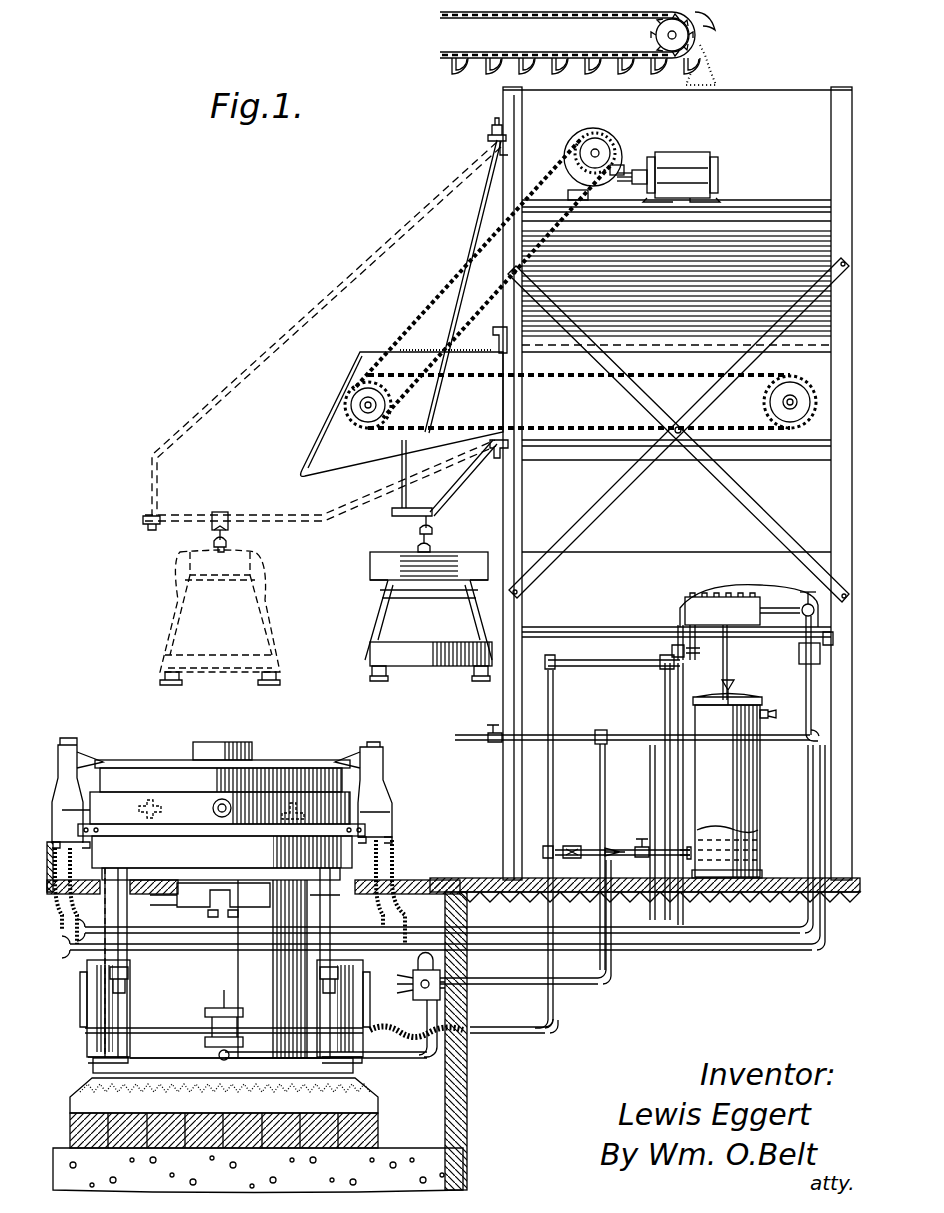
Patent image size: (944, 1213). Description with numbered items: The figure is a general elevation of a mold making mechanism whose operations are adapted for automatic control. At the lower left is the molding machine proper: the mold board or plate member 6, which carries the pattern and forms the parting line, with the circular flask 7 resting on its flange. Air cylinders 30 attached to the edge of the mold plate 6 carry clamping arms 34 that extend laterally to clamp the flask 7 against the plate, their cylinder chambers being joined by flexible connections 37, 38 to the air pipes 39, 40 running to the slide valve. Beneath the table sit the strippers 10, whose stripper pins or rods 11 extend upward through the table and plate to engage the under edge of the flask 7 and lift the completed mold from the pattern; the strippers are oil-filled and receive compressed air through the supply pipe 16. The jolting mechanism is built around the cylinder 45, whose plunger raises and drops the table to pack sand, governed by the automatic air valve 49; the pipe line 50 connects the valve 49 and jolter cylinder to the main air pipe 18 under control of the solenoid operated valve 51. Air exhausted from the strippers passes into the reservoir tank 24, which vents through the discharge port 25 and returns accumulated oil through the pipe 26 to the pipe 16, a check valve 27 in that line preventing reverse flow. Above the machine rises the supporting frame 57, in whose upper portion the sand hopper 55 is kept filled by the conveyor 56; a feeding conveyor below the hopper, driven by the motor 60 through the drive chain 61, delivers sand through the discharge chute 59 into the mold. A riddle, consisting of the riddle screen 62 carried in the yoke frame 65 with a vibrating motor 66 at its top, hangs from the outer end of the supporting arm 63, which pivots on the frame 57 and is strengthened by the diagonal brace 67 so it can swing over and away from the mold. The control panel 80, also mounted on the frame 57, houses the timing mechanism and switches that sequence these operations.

The mold board or plate member 6 is at (176, 822).
The flask 7 is at (125, 790).
The strippers 10 is at (87, 998).
The stripper pins or rods 11 is at (128, 885).
The supply pipe 16 is at (147, 1030).
The pipe 18 is at (778, 610).
The reservoir tank 24 is at (750, 765).
The discharge port 25 is at (770, 713).
The pipe 26 is at (630, 848).
The check valve 27 is at (572, 845).
The air cylinders 30 is at (83, 806).
The clamping arms 34 is at (360, 752).
The flexible connection 37 is at (394, 848).
The flexible connection 38 is at (400, 868).
The air pipe 39 is at (650, 772).
The air pipe 40 is at (678, 753).
The cylinder 45 is at (453, 1034).
The automatic air valve 49 is at (224, 1008).
The pipe line 50 is at (427, 1009).
The solenoid operated valve 51 is at (413, 972).
The hopper 55 is at (528, 112).
The conveyor 56 is at (491, 58).
The supporting frame 57 is at (610, 428).
The discharge chute 59 is at (340, 433).
The motor 60 is at (678, 160).
The drive chain 61 is at (546, 185).
The riddle screen 62 is at (185, 655).
The supporting arm 63 is at (249, 512).
The yoke frame 65 is at (272, 614).
The motor 66 is at (428, 570).
The diagonal brace 67 is at (297, 320).
The control panel 80 is at (645, 567).